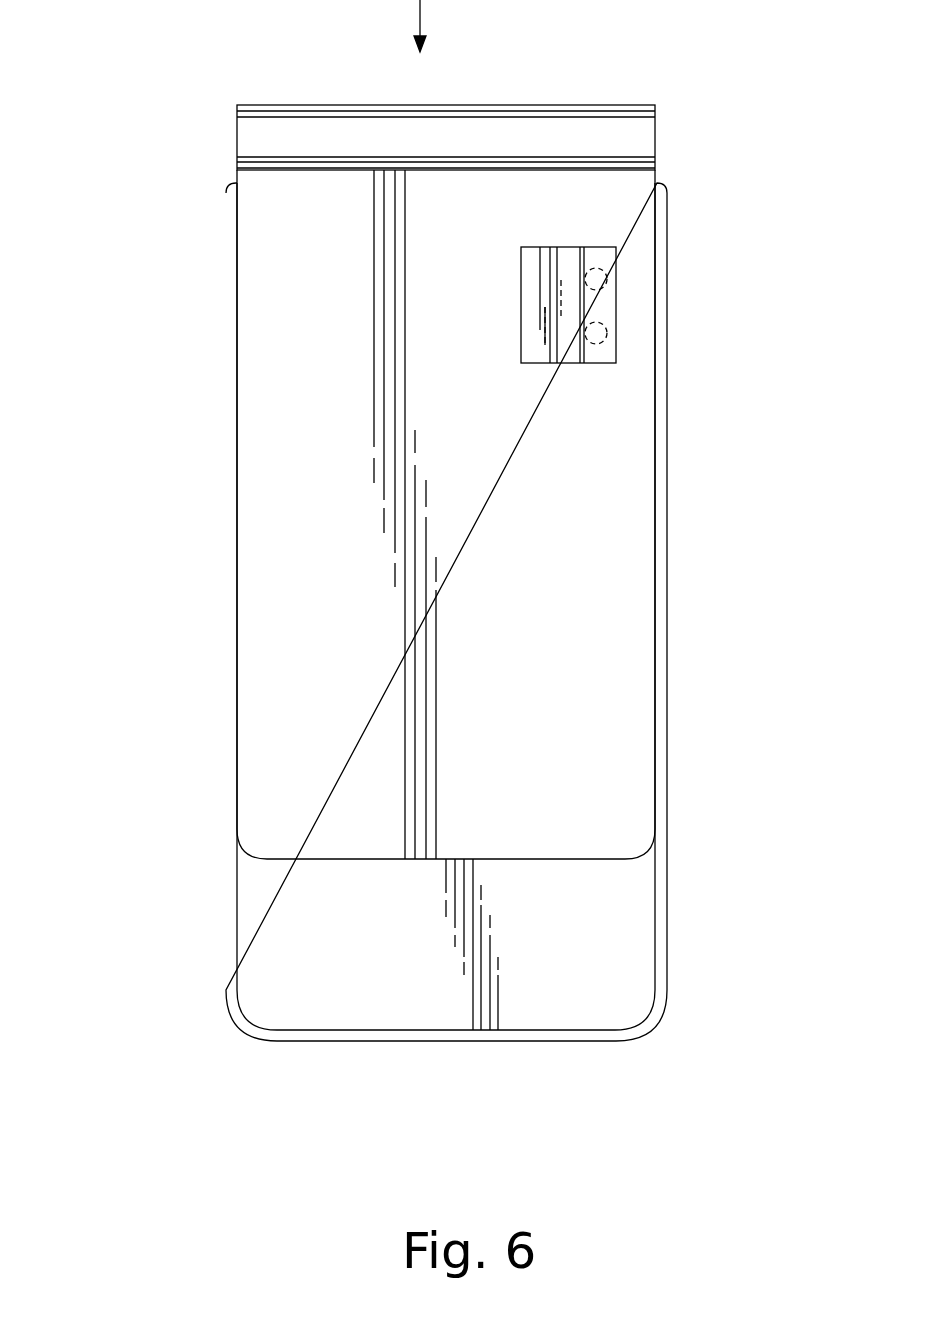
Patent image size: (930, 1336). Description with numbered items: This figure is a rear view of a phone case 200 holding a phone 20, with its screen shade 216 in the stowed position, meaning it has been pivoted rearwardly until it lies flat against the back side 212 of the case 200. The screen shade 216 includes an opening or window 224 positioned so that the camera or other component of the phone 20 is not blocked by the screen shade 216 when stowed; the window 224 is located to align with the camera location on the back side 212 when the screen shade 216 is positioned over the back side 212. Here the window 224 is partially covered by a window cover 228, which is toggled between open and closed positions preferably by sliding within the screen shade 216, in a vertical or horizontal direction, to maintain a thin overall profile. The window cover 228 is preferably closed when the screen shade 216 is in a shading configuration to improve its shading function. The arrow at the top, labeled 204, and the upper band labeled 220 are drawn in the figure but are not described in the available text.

The phone case 200 is at (172, 80).
The insertion direction 204 is at (390, 0).
The back side 212 is at (655, 960).
The screen shade 216 is at (632, 855).
The header 220 is at (655, 133).
The window 224 is at (642, 308).
The window cover 228 is at (584, 308).
The phone 20 is at (598, 318).